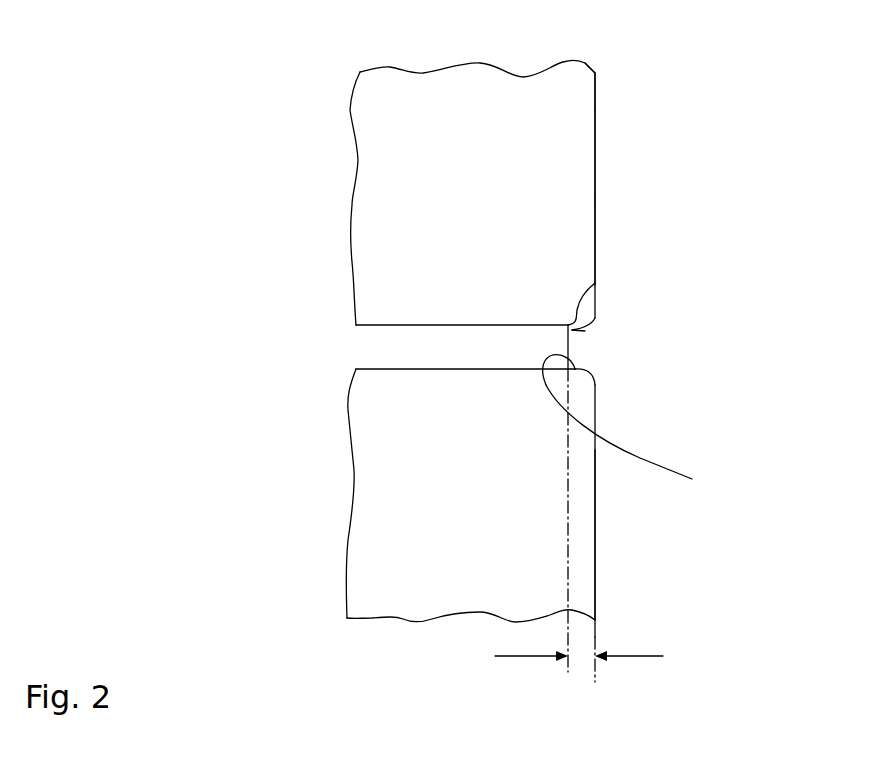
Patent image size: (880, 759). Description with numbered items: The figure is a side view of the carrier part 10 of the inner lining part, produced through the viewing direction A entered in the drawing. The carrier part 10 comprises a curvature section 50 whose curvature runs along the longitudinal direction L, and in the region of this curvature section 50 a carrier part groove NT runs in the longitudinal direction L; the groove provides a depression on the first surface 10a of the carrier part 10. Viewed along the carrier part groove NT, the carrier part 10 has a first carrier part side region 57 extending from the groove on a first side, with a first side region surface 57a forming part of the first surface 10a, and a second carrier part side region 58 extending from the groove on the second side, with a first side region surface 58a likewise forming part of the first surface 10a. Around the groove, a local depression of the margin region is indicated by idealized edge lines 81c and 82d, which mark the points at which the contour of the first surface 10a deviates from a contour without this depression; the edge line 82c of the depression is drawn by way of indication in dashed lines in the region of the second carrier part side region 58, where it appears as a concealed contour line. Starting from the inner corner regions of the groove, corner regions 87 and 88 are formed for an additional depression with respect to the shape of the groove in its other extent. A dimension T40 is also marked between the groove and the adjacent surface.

The viewing direction A is at (191, 150).
The second carrier part side region 58 is at (439, 150).
The first carrier part side region 57 is at (439, 477).
The curvature section 50 is at (545, 237).
The longitudinal direction L is at (414, 348).
The carrier part groove NT is at (324, 360).
The first surface 10a is at (606, 101).
The carrier part 10 is at (599, 173).
The first side region surface 58a is at (564, 262).
The edge line 82d is at (595, 283).
The corner region 88 is at (585, 331).
The corner region 87 is at (566, 357).
The edge line 81c is at (575, 388).
The edge line 82c is at (638, 439).
The first side region surface 57a is at (585, 544).
The thickness dimension T40 is at (580, 672).